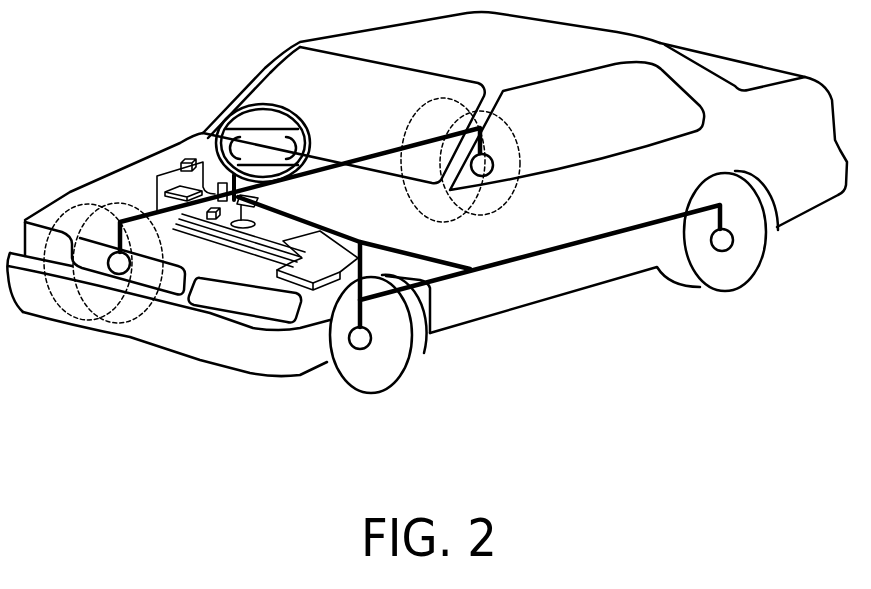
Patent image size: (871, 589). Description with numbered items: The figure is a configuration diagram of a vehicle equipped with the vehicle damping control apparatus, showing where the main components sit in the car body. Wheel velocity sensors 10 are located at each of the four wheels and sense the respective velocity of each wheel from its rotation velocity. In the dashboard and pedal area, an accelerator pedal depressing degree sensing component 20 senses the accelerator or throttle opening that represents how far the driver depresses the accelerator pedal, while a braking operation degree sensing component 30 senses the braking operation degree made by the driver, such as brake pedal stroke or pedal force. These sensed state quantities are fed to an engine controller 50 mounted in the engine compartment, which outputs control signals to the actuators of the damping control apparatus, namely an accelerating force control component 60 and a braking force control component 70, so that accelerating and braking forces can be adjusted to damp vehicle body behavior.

The wheel velocity sensor 10 is at (118, 276).
The accelerator pedal depressing degree sensing component 20 is at (187, 158).
The braking operation degree sensing component 30 is at (222, 184).
The engine controller 50 is at (308, 286).
The accelerating force control component 60 is at (180, 193).
The braking force control component 70 is at (236, 200).